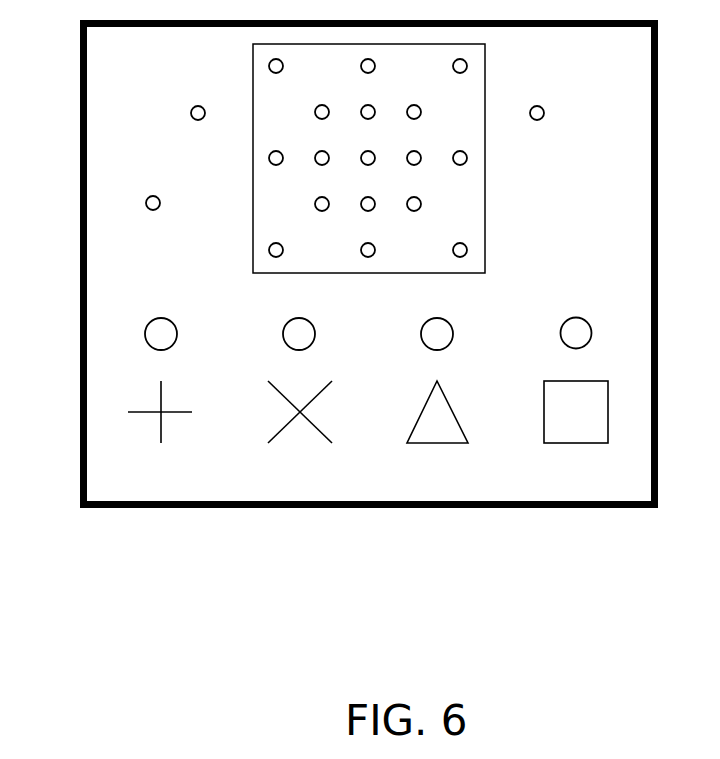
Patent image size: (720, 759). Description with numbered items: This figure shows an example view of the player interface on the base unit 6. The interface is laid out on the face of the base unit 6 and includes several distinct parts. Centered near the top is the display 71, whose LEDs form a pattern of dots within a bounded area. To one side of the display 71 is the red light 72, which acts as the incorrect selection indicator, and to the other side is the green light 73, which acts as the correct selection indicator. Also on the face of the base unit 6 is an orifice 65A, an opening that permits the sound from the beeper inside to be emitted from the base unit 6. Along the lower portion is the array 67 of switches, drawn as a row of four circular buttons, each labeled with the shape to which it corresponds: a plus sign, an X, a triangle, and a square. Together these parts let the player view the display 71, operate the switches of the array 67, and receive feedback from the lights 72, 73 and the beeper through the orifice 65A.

The base unit 6 is at (80, 135).
The display 71 is at (473, 85).
The red light 72 is at (194, 107).
The green light 73 is at (543, 107).
The orifice 65A is at (147, 198).
The array of switches 67 is at (562, 322).